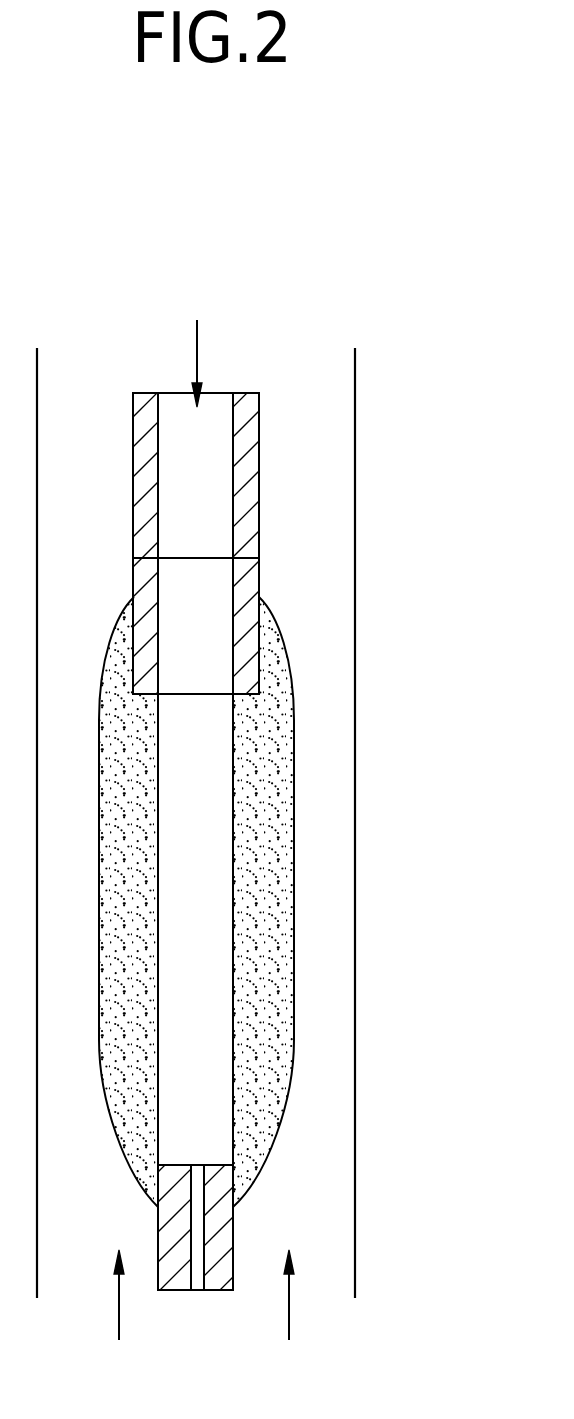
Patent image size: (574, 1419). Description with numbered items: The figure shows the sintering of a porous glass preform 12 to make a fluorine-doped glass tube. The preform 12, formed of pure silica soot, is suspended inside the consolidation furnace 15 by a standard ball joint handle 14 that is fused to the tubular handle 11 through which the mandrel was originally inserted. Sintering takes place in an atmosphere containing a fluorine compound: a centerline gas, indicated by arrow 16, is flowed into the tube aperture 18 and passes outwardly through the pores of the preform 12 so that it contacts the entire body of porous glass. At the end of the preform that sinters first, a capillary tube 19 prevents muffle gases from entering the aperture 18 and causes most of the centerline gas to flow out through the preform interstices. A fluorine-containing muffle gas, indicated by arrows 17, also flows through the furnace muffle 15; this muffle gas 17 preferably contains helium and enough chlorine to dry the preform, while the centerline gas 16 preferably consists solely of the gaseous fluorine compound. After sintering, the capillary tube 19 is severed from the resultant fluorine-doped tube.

The tubular handle 11 is at (247, 603).
The porous glass preform 12 is at (281, 773).
The ball joint handle 14 is at (133, 490).
The consolidation furnace 15 is at (355, 583).
The centerline gas flow 16 is at (197, 360).
The muffle gas flow 17 is at (289, 1313).
The tube aperture 18 is at (233, 1015).
The capillary tube 19 is at (223, 1248).